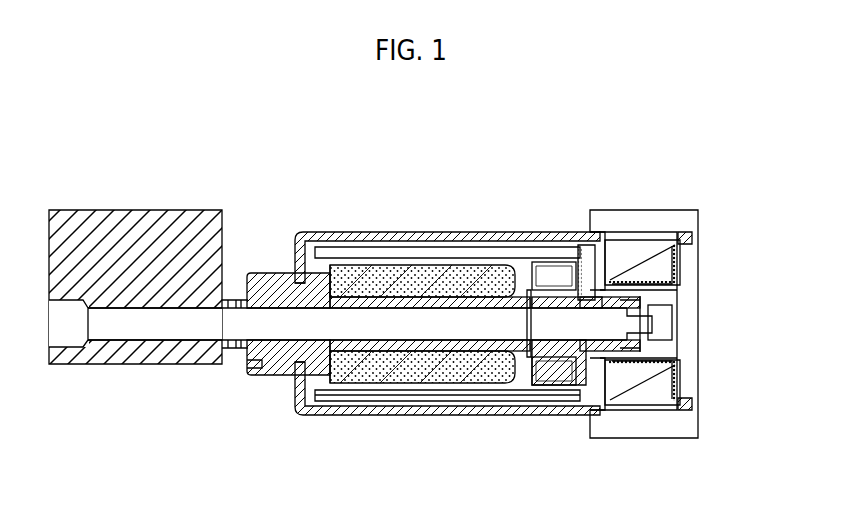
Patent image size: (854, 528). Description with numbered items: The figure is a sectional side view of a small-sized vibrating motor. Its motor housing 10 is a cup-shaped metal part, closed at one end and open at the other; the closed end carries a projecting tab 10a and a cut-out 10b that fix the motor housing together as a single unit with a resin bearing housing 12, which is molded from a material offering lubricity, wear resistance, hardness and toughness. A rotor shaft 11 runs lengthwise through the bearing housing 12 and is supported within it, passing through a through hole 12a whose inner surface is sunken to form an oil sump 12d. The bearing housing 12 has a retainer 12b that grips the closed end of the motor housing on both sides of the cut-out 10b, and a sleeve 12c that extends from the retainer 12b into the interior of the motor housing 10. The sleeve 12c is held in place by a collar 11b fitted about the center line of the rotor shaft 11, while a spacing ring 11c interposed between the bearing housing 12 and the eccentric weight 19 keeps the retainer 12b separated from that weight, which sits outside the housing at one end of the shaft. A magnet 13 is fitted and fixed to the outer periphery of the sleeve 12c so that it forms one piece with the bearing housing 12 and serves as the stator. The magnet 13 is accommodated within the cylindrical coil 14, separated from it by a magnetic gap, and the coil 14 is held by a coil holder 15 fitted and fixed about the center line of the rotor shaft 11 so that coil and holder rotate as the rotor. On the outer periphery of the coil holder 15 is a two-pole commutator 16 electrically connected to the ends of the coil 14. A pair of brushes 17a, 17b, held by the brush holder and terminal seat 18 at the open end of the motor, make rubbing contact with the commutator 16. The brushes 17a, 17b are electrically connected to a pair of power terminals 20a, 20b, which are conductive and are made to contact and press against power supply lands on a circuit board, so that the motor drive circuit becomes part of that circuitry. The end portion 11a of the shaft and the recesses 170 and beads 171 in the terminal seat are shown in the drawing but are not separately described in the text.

The motor housing 10 is at (458, 228).
The projecting tab 10a is at (273, 368).
The cut-out 10b is at (283, 280).
The rotor shaft 11 is at (143, 355).
The shaft end portion 11a is at (678, 322).
The collar 11b is at (538, 300).
The spacing ring 11c is at (228, 357).
The bearing housing 12 is at (253, 263).
The through hole 12a is at (503, 298).
The retainer 12b is at (250, 373).
The sleeve 12c is at (375, 296).
The oil sump 12d is at (392, 335).
The magnet 13 is at (457, 380).
The coil 14 is at (415, 398).
The coil holder 15 is at (557, 385).
The commutator 16 is at (590, 270).
The brush 17a is at (627, 252).
The brush 17b is at (643, 390).
The bearing recess 170 is at (650, 282).
The seal bead 171 is at (680, 254).
The brush holder and terminal seat 18 is at (692, 210).
The eccentric weight 19 is at (141, 205).
The power terminal 20a is at (688, 237).
The power terminal 20b is at (698, 408).